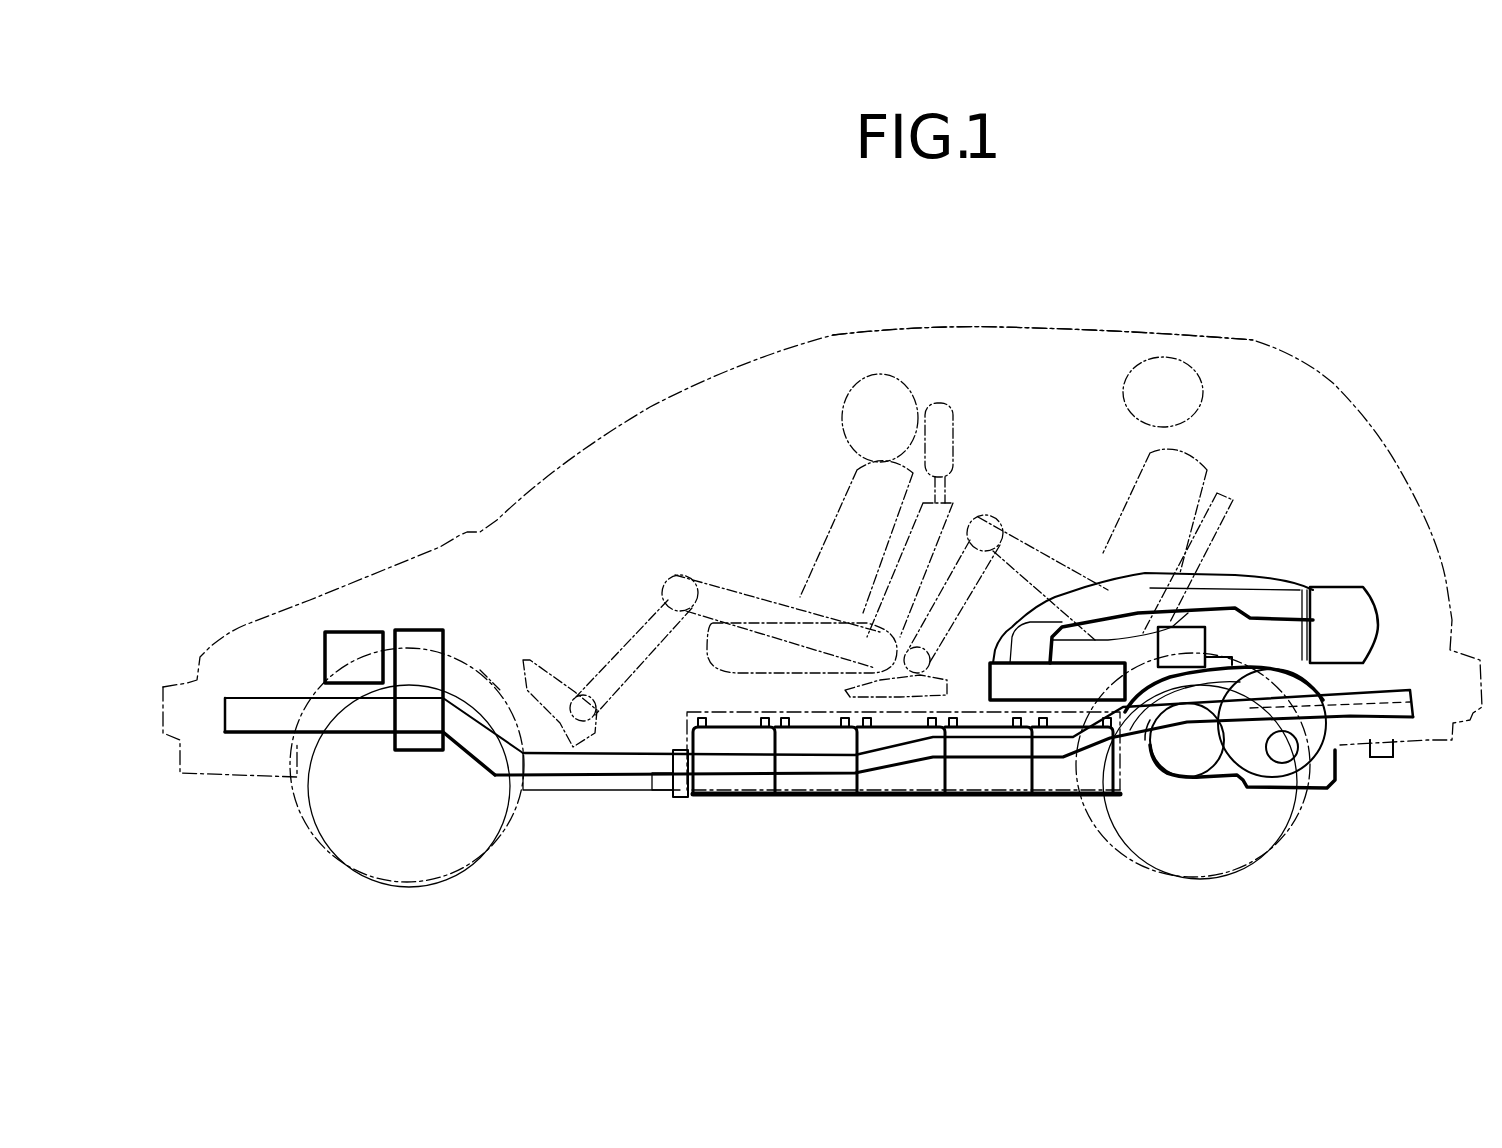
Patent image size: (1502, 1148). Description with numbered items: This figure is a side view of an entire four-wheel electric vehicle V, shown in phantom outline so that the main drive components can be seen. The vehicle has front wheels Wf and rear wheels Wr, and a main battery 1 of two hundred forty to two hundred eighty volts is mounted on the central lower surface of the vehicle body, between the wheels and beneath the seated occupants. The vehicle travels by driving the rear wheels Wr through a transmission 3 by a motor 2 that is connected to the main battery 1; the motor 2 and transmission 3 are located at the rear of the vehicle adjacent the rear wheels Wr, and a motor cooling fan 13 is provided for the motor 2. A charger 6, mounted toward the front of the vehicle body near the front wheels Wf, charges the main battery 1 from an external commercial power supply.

The main battery 1 is at (757, 790).
The motor 2 is at (935, 290).
The transmission 3 is at (1340, 775).
The charger 6 is at (423, 638).
The motor cooling fan 13 is at (1393, 757).
The vehicle body V is at (590, 415).
The front wheels Wf is at (316, 833).
The rear wheels Wr is at (1298, 812).